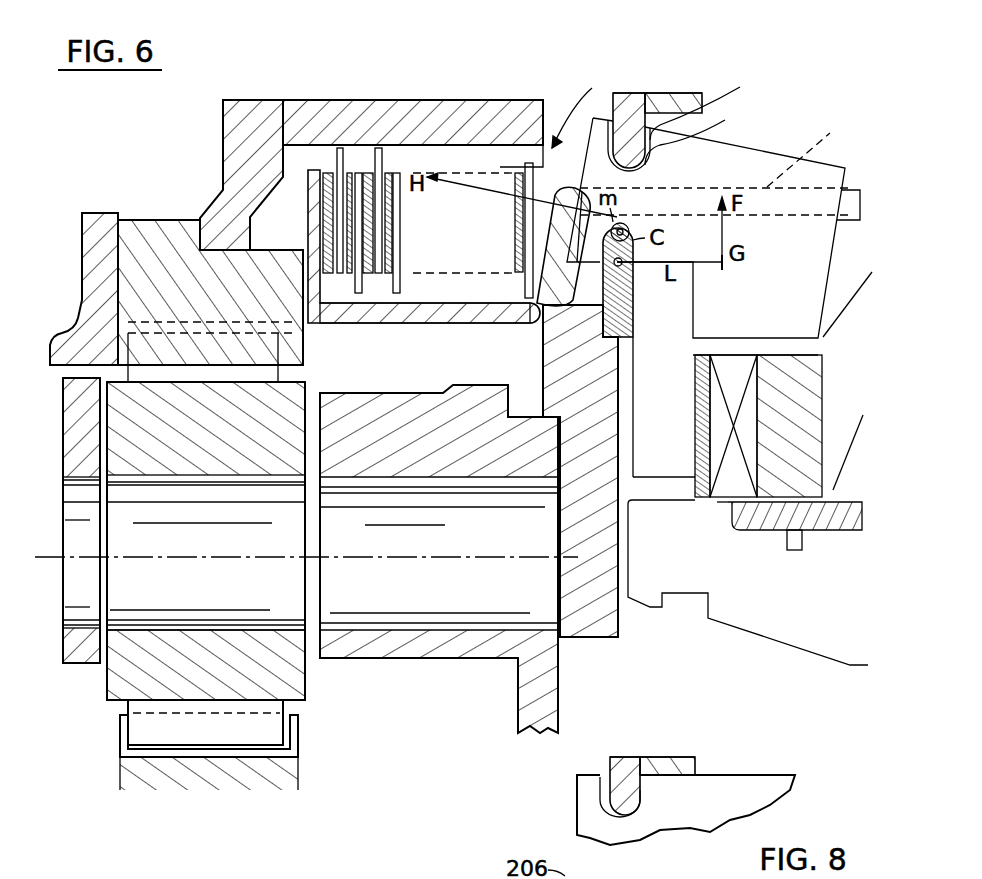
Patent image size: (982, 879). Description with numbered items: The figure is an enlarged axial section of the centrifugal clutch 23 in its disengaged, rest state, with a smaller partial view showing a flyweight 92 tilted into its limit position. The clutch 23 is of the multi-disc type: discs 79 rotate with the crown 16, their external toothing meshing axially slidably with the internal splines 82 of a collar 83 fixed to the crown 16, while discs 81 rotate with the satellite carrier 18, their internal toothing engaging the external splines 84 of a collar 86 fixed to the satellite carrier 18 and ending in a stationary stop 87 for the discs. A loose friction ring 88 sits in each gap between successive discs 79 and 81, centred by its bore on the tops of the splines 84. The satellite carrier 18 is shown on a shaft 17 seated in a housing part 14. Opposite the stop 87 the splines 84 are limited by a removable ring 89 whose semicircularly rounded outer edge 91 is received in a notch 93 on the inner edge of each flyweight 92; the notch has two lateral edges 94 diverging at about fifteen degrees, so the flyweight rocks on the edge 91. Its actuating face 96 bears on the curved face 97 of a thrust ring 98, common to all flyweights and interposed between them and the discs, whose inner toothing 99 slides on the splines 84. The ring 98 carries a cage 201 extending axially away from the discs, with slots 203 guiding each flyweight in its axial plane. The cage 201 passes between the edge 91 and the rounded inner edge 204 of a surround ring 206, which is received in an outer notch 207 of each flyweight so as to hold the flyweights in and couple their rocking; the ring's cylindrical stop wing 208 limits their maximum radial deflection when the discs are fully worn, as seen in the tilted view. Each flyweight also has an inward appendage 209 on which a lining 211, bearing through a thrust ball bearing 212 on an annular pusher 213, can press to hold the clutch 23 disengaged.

In FIG. 6, the housing cup 14 is at (293, 775).
In FIG. 6, the crown 16 is at (148, 260).
In FIG. 6, the shaft 17 is at (133, 670).
In FIG. 6, the satellite carrier 18 is at (80, 647).
In FIG. 6, the clutch 23 is at (579, 105).
In FIG. 6, the discs 79 is at (328, 150).
In FIG. 6, the discs 81 is at (400, 243).
In FIG. 6, the internal splines 82 is at (447, 157).
In FIG. 6, the collar 83 is at (250, 142).
In FIG. 6, the external splines 84 is at (447, 287).
In FIG. 6, the collar 86 is at (417, 317).
In FIG. 6, the stationary stop 87 is at (307, 235).
In FIG. 6, the loose friction ring 88 is at (325, 188).
In FIG. 6, the removable ring 89 is at (637, 273).
In FIG. 6, the radially outer edge 91 is at (640, 225).
In FIG. 6, the flyweight 92 is at (803, 270).
In FIG. 8, the flyweight 92 is at (738, 795).
In FIG. 6, the notch 93 is at (630, 225).
In FIG. 6, the lateral edges 94 is at (637, 300).
In FIG. 6, the actuating face 96 is at (583, 190).
In FIG. 6, the curved face 97 is at (543, 340).
In FIG. 6, the thrust ring 98 is at (517, 242).
In FIG. 6, the toothing 99 is at (523, 327).
In FIG. 6, the cage 201 is at (724, 164).
In FIG. 6, the slots 203 is at (860, 190).
In FIG. 6, the radially inner edge 204 is at (709, 136).
In FIG. 6, the surround ring 206 is at (627, 108).
In FIG. 8, the surround ring 206 is at (622, 762).
In FIG. 6, the notch 207 is at (712, 101).
In FIG. 6, the stop wing 208 is at (677, 93).
In FIG. 8, the stop wing 208 is at (683, 757).
In FIG. 6, the appendage 209 is at (662, 462).
In FIG. 6, the lining 211 is at (692, 490).
In FIG. 6, the thrust ball bearing 212 is at (725, 488).
In FIG. 6, the annular pusher 213 is at (813, 492).